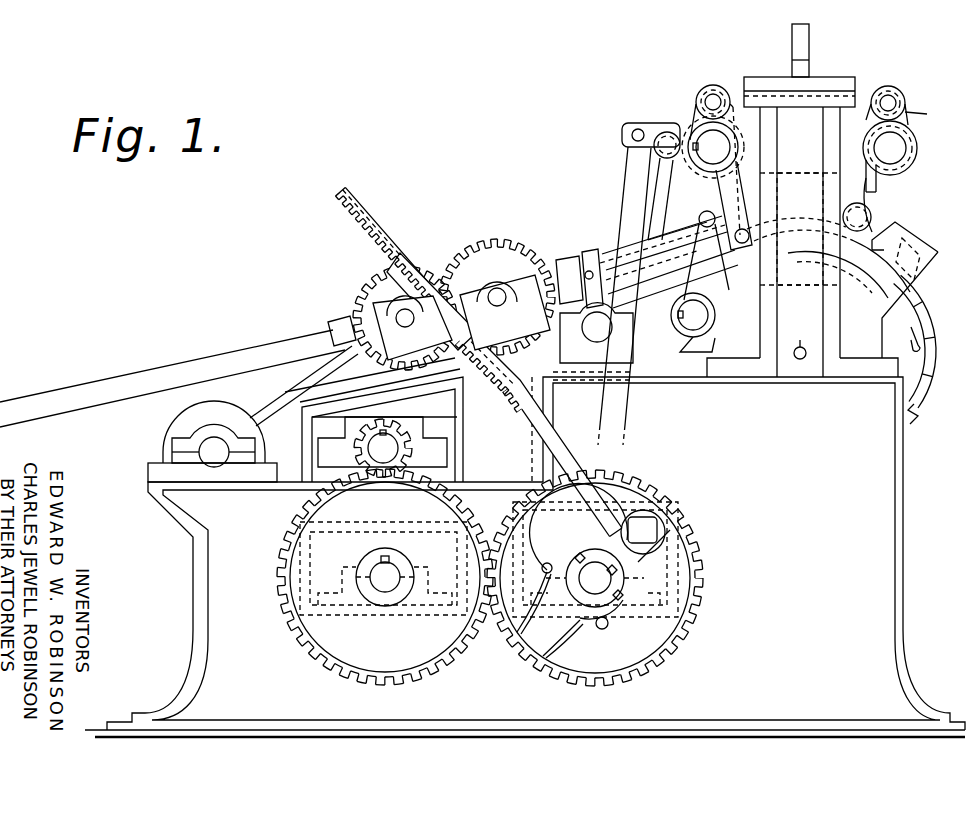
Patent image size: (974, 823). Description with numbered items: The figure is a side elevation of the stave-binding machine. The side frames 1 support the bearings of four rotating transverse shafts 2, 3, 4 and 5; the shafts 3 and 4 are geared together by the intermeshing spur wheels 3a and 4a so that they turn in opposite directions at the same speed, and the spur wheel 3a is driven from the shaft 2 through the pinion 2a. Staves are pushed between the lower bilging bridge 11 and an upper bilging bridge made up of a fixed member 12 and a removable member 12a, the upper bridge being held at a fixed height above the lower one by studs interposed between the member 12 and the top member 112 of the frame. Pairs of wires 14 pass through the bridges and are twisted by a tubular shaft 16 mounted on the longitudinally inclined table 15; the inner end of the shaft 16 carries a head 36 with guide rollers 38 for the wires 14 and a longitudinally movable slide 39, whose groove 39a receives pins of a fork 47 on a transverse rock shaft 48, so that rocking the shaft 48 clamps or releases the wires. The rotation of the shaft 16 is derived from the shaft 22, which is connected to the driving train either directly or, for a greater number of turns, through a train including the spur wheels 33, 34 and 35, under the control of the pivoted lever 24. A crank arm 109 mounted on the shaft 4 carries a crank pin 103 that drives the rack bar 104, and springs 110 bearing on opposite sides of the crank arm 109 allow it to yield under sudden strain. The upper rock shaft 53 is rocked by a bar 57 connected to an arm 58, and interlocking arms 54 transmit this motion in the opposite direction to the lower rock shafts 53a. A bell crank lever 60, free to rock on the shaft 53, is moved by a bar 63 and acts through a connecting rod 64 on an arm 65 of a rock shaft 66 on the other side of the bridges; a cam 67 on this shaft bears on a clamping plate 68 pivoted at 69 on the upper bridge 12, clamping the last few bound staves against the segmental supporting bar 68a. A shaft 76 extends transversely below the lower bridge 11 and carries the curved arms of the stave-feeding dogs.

The side frames 1 is at (525, 557).
The transverse shaft 2 is at (383, 448).
The pinion 2a is at (352, 446).
The transverse shaft 3 is at (385, 577).
The spur wheel 3a is at (383, 573).
The transverse shaft 4 is at (595, 578).
The spur wheel 4a is at (595, 571).
The transverse shaft 5 is at (212, 441).
The lower bilging bridge 11 is at (828, 242).
The upper bilging bridge member 12 is at (820, 172).
The upper bilging bridge member 12a is at (800, 229).
The wires 14 is at (85, 392).
The table 15 is at (350, 395).
The tubular shaft 16 is at (332, 322).
The shaft 22 is at (375, 304).
The pivoted lever 24 is at (282, 400).
The spur wheel 33 is at (497, 297).
The spur wheel 34 is at (506, 280).
The spur wheel 35 is at (405, 318).
The head 36 is at (708, 248).
The guide rollers 38 is at (700, 214).
The slide 39 is at (565, 260).
The groove 39a is at (590, 252).
The fork 47 is at (598, 300).
The rock shaft 48 is at (596, 333).
The upper rock shaft 53 is at (713, 147).
The lower rock shafts 53a is at (692, 322).
The interlocking arms 54 is at (718, 185).
The bar 57 is at (624, 296).
The arm 58 is at (633, 122).
The bell crank lever 60 is at (695, 122).
The bar 63 is at (655, 180).
The connecting rod 64 is at (736, 90).
The arm 65 is at (926, 117).
The rock shaft 66 is at (890, 156).
The cam 67 is at (892, 222).
The clamping plate 68 is at (920, 225).
The segmental supporting bar 68a is at (914, 332).
The pivot 69 is at (885, 208).
The shaft 76 is at (800, 342).
The crank pin 103 is at (643, 532).
The rack bar 104 is at (372, 228).
The crank arm 109 is at (612, 548).
The springs 110 is at (520, 632).
The top member 112 is at (828, 80).